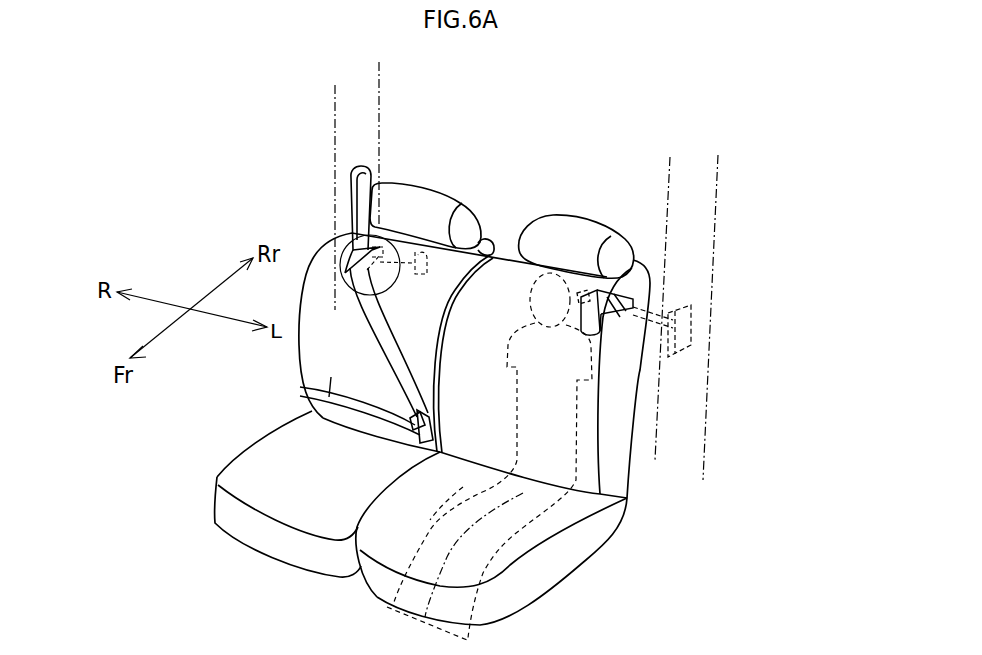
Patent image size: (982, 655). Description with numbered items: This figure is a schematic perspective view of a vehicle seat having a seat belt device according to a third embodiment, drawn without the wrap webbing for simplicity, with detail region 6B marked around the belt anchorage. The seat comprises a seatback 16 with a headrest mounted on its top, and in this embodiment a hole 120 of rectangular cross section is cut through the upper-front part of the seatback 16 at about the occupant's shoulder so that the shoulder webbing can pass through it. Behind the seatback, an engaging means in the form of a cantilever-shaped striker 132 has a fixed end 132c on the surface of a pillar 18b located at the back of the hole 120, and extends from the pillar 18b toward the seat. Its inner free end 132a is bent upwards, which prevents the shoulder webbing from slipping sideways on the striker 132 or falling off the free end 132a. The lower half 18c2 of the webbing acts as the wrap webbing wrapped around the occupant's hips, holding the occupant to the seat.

The seatback 16 is at (583, 457).
The pillar 18b is at (365, 125).
The detail region shown in FIG. 6B is at (345, 245).
The lower half of the webbing 18c2 is at (300, 387).
The free end of the striker 132a is at (560, 290).
The hole 120 is at (608, 280).
The striker 132 is at (653, 297).
The fixed end of the striker 132c is at (682, 323).